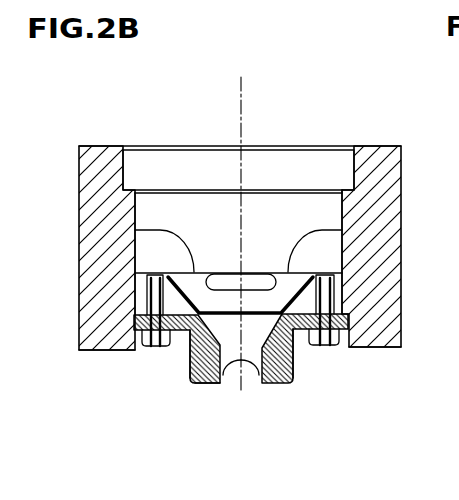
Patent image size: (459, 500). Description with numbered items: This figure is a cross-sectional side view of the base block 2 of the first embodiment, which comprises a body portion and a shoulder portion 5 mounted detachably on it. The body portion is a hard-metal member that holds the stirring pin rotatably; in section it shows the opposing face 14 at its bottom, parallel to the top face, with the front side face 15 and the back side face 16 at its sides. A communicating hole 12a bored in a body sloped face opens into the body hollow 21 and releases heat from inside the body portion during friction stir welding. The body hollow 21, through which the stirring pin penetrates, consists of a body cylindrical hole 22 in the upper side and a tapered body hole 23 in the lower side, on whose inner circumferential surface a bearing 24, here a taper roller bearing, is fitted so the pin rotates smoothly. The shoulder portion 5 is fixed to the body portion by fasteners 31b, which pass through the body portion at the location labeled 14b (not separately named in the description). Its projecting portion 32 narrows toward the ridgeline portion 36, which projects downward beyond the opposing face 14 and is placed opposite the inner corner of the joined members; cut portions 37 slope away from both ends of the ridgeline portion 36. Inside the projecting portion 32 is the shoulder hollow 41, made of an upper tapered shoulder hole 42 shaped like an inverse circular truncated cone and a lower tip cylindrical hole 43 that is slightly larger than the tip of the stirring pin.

The motor assembly 2 is at (284, 104).
The shoulder portion 5 is at (286, 392).
The communicating hole 12a is at (230, 272).
The opposing face 14 is at (88, 358).
The bolt 14b is at (172, 331).
The front side face 15 is at (402, 181).
The back side face 16 is at (79, 181).
The body hollow 21 is at (326, 212).
The body cylindrical hole 22 is at (140, 219).
The tapered body hole 23 is at (344, 232).
The bearing 24 is at (138, 234).
The fastener 31b is at (146, 346).
The projecting portion 32 is at (180, 330).
The ridgeline portion 36 is at (210, 384).
The cut portion 37 is at (200, 385).
The shoulder hollow 41 is at (233, 380).
The tapered shoulder hole 42 is at (280, 348).
The tip cylindrical hole 43 is at (257, 364).